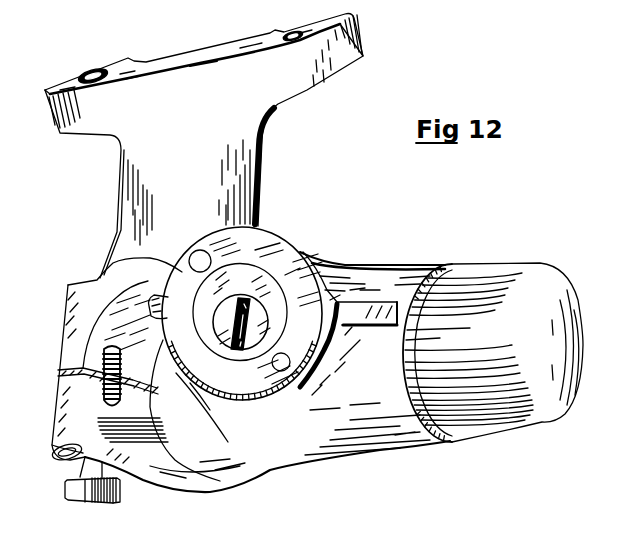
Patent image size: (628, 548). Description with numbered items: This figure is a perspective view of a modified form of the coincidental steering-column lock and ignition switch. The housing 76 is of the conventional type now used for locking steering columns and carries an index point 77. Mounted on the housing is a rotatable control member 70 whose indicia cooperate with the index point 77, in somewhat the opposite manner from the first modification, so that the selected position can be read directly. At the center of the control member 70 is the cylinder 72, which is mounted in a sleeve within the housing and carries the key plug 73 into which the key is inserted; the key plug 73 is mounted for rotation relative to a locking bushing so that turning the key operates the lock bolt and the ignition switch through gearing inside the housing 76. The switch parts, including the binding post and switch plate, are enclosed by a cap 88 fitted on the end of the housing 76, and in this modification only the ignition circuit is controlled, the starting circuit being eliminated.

The control member 70 is at (297, 273).
The cylinder 72 is at (282, 308).
The key plug 73 is at (258, 326).
The housing 76 is at (162, 227).
The index point 77 is at (156, 305).
The cap 88 is at (528, 390).